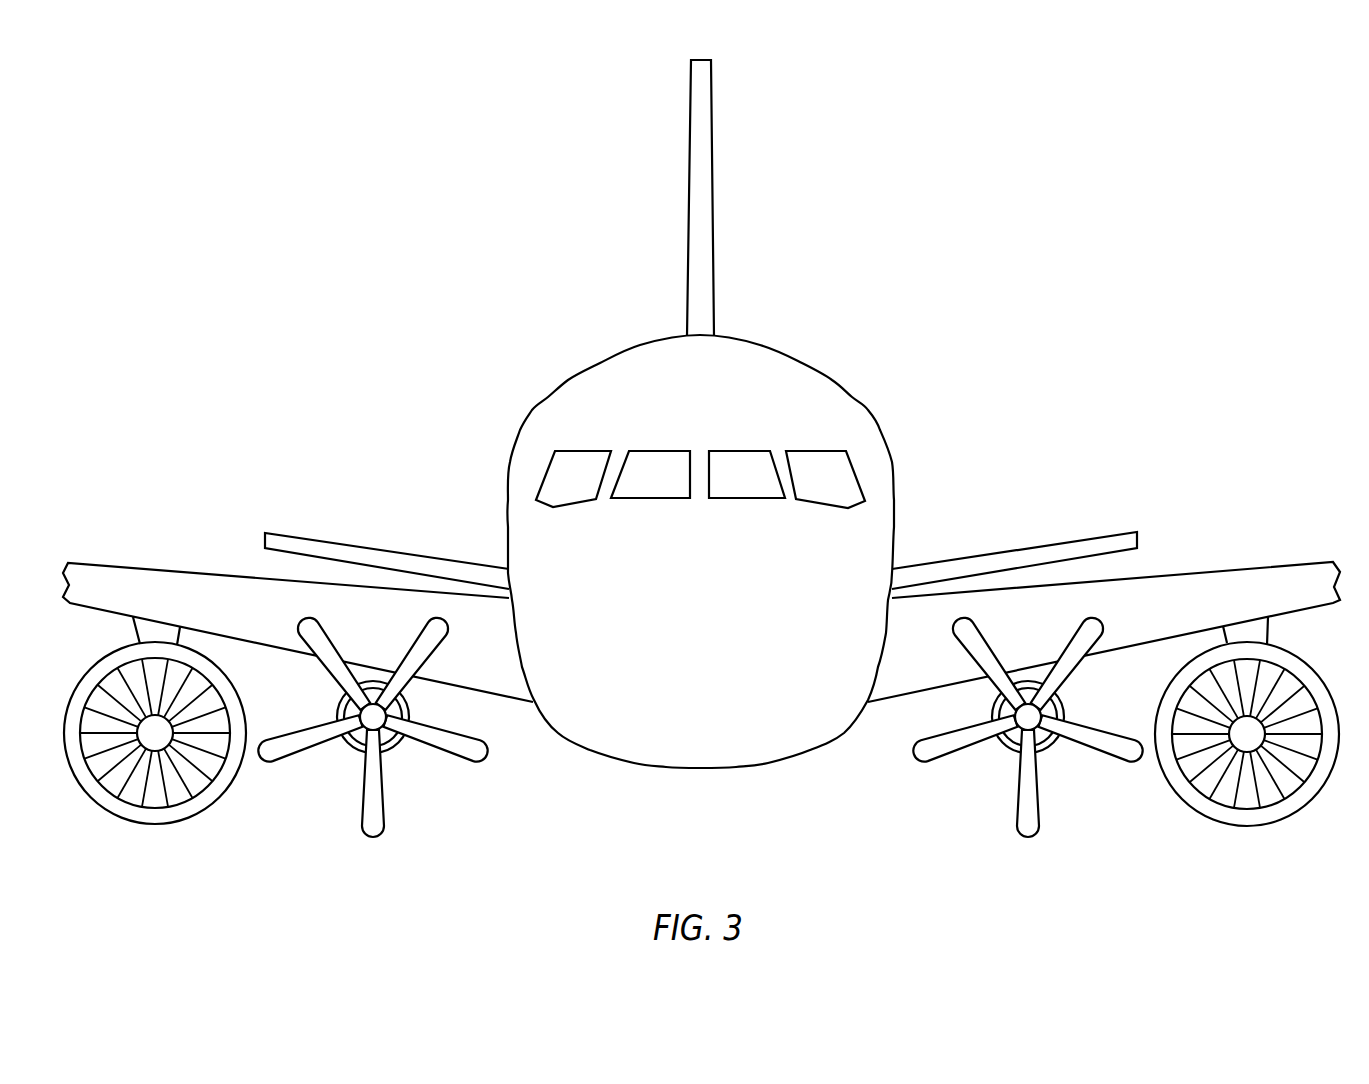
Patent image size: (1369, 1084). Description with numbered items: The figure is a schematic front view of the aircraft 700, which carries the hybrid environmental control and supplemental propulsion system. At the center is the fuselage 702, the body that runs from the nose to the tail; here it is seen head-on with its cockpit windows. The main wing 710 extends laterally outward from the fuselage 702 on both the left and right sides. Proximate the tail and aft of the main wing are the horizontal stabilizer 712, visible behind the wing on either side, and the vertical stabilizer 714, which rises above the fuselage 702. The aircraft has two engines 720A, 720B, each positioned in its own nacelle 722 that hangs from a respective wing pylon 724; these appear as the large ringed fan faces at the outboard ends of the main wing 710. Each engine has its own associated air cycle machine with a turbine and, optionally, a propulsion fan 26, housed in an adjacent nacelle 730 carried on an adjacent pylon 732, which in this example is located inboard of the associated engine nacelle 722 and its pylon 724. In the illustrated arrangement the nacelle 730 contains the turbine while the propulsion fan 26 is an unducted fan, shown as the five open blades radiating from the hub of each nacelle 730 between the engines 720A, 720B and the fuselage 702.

The aircraft 700 is at (1028, 323).
The fuselage 702 is at (897, 465).
The vertical stabilizer 714 is at (731, 199).
The main wing 710 is at (177, 533).
The horizontal stabilizer 712 is at (376, 522).
The wing pylon 724 is at (163, 625).
The engine 720B is at (155, 835).
The nacelle 722 is at (212, 833).
The engine 720A is at (1188, 806).
The propulsion fan 26 is at (388, 850).
The pylon 732 is at (376, 658).
The nacelle 730 is at (427, 708).